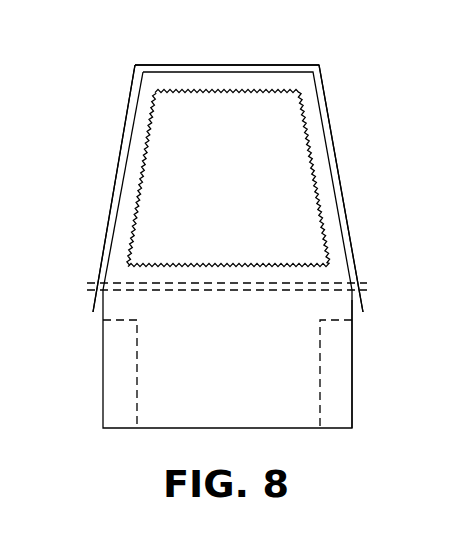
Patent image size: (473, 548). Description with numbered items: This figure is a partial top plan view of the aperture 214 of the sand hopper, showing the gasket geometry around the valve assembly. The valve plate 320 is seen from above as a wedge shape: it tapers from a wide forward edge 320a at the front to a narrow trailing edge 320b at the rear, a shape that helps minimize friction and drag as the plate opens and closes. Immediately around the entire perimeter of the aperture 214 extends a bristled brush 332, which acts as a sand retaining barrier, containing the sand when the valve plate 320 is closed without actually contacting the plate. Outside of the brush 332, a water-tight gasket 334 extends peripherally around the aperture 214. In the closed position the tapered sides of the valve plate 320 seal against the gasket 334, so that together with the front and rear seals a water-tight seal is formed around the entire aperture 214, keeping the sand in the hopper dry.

The aperture 214 is at (173, 168).
The valve plate 320 is at (152, 315).
The wide forward edge 320a is at (340, 320).
The narrow trailing edge 320b is at (145, 79).
The bristled brush 332 is at (308, 148).
The water-tight gasket 334 is at (228, 65).